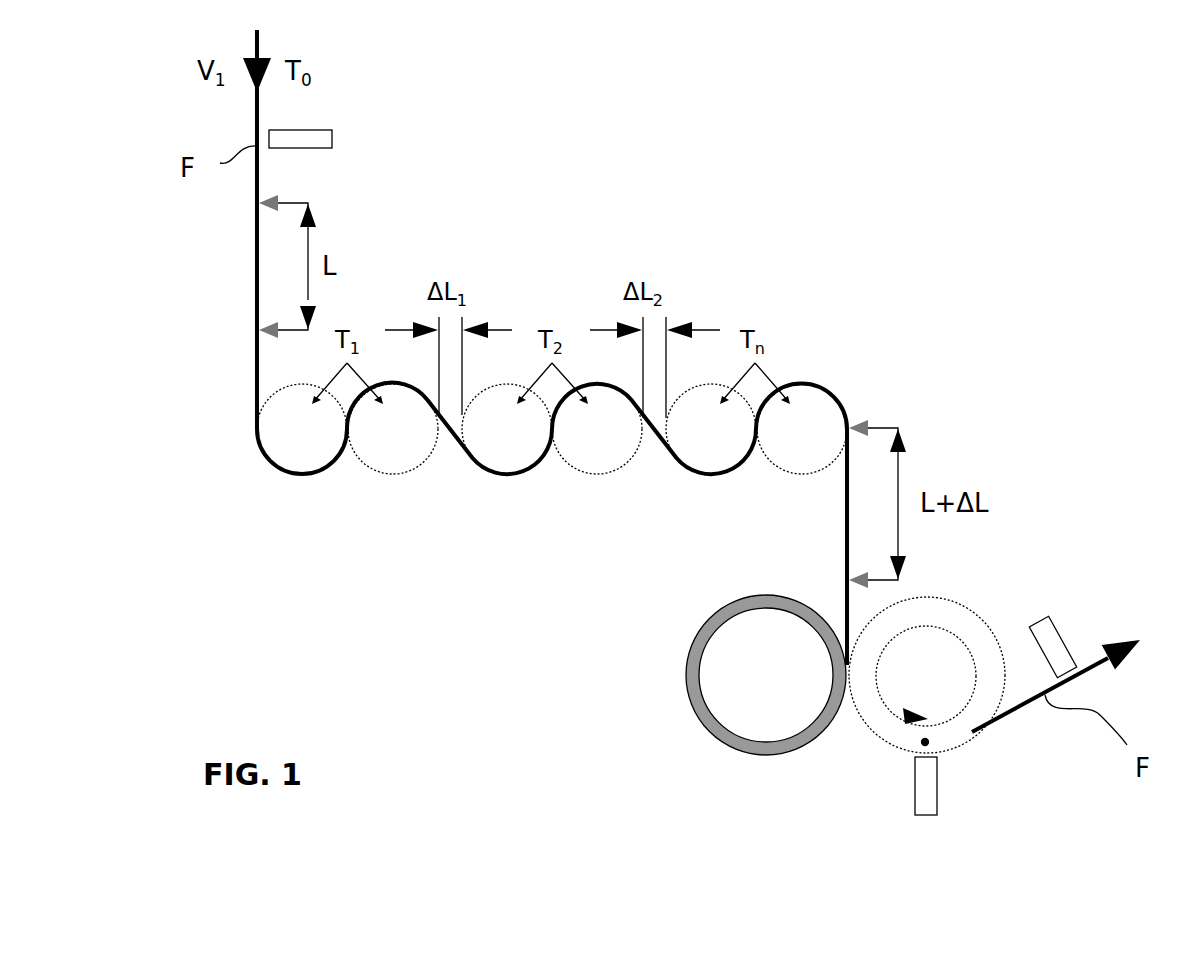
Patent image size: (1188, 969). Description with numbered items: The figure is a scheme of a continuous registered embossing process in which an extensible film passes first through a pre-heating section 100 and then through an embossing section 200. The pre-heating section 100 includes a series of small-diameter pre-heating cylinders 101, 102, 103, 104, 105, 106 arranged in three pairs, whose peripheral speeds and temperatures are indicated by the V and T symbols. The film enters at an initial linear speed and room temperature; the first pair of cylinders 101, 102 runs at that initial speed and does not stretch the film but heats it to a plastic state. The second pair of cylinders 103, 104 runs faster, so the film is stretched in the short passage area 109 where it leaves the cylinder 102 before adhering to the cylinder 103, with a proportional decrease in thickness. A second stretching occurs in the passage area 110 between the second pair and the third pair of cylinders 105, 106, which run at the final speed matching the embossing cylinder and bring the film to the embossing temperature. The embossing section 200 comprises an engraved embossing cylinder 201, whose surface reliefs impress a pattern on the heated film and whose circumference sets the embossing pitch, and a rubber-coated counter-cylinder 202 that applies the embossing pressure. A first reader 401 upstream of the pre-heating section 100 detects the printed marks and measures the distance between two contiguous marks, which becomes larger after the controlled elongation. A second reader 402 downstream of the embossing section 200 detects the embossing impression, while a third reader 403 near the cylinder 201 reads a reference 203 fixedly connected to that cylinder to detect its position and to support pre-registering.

The pre-heating section 100 is at (732, 224).
The pre-heating cylinder 101 is at (292, 458).
The pre-heating cylinder 102 is at (378, 458).
The pre-heating cylinder 103 is at (505, 465).
The pre-heating cylinder 104 is at (587, 465).
The pre-heating cylinder 105 is at (710, 462).
The pre-heating cylinder 106 is at (793, 462).
The passage area 109 is at (450, 452).
The passage area 110 is at (660, 456).
The embossing section 200 is at (650, 724).
The engraved embossing cylinder 201 is at (885, 718).
The counter-cylinder 202 is at (733, 740).
The reference 203 is at (925, 742).
The first reader 401 is at (308, 153).
The second reader 402 is at (1037, 616).
The third reader 403 is at (927, 815).